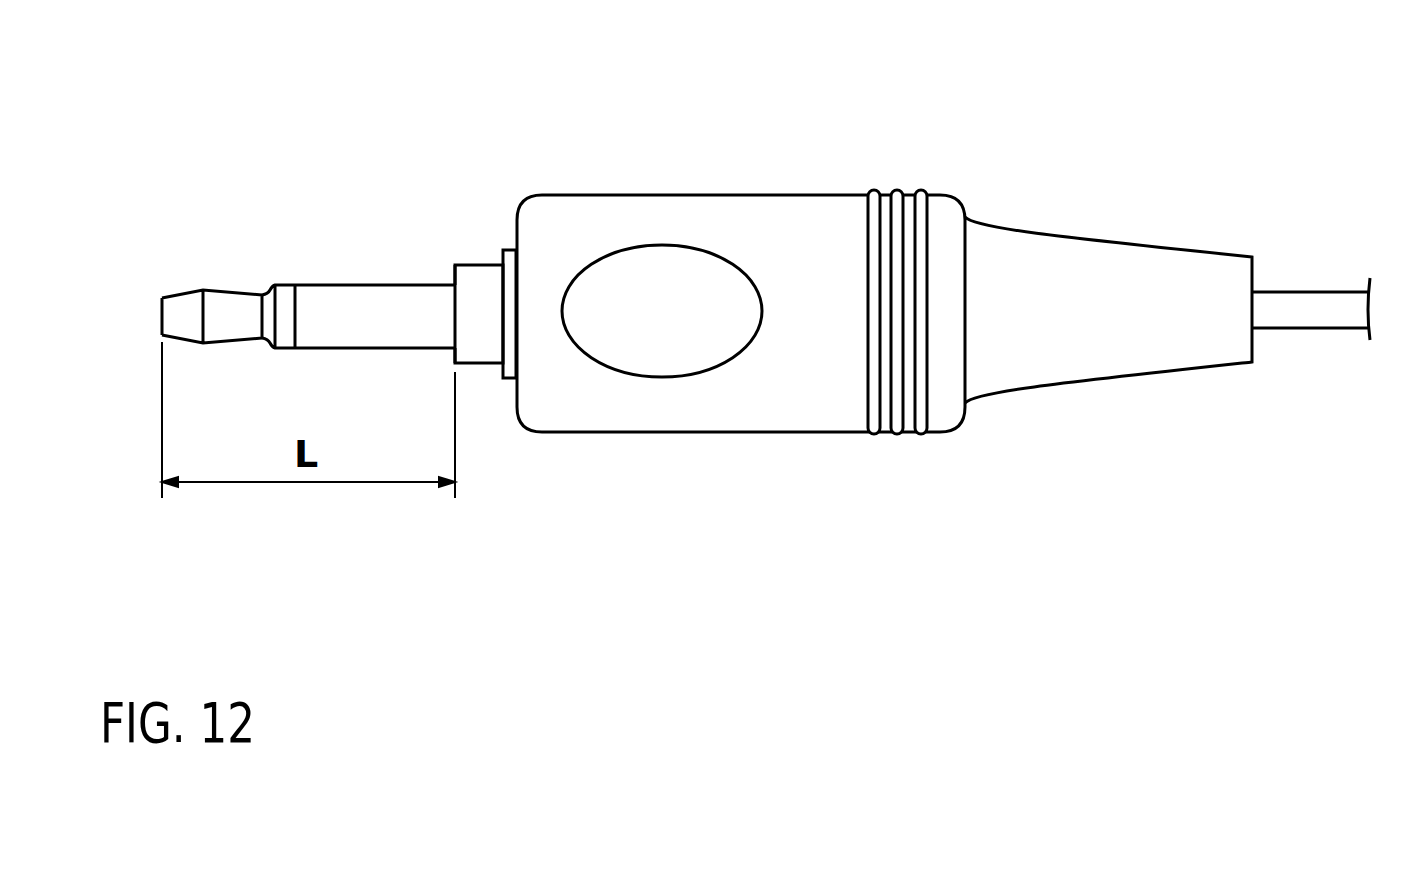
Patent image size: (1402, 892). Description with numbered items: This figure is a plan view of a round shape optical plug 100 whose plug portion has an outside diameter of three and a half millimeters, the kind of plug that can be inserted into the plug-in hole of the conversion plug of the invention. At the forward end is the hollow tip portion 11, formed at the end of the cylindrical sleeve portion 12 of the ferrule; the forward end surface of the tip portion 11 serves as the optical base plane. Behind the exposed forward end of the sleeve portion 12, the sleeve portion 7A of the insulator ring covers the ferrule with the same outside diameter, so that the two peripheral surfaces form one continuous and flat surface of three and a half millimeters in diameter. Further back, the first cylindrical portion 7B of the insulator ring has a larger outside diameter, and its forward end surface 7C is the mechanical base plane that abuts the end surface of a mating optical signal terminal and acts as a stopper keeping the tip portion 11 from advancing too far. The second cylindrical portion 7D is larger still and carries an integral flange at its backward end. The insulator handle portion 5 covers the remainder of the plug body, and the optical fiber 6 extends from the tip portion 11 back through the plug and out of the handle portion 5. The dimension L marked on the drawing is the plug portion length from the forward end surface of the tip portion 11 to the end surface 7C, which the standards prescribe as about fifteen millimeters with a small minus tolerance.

The round shape optical plug 100 is at (620, 182).
The tip portion 11 is at (187, 300).
The sleeve portion 12 is at (283, 290).
The sleeve portion of the insulator ring 7A is at (340, 295).
The first cylindrical portion 7B is at (472, 275).
The end surface 7C is at (452, 275).
The second cylindrical portion 7D is at (507, 258).
The handle portion 5 is at (650, 417).
The optical fiber 6 is at (1300, 314).